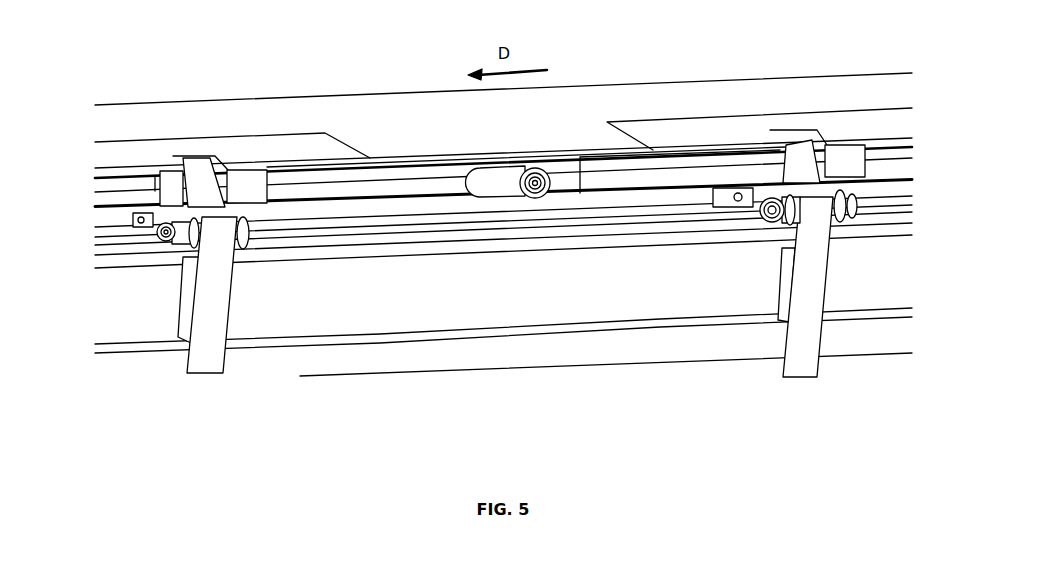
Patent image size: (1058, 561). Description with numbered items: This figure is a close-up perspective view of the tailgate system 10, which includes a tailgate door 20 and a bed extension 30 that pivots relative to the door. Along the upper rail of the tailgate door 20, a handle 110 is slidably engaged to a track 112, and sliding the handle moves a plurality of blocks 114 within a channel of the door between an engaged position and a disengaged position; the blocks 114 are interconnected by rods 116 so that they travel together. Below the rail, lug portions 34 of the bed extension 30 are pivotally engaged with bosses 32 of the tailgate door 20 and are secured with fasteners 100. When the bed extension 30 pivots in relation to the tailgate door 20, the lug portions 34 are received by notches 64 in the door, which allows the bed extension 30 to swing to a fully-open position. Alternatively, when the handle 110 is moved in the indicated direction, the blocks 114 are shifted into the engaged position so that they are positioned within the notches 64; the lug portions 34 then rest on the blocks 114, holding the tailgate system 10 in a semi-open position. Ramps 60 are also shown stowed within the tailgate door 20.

The tailgate system 10 is at (304, 48).
The tailgate door 20 is at (208, 117).
The bed extension 30 is at (740, 382).
The bosses 32 is at (190, 247).
The lug portions 34 is at (217, 302).
The ramps 60 is at (503, 247).
The notches 64 is at (198, 170).
The fasteners 100 is at (163, 237).
The handle 110 is at (528, 172).
The track 112 is at (475, 172).
The blocks 114 is at (244, 185).
The rods 116 is at (383, 180).